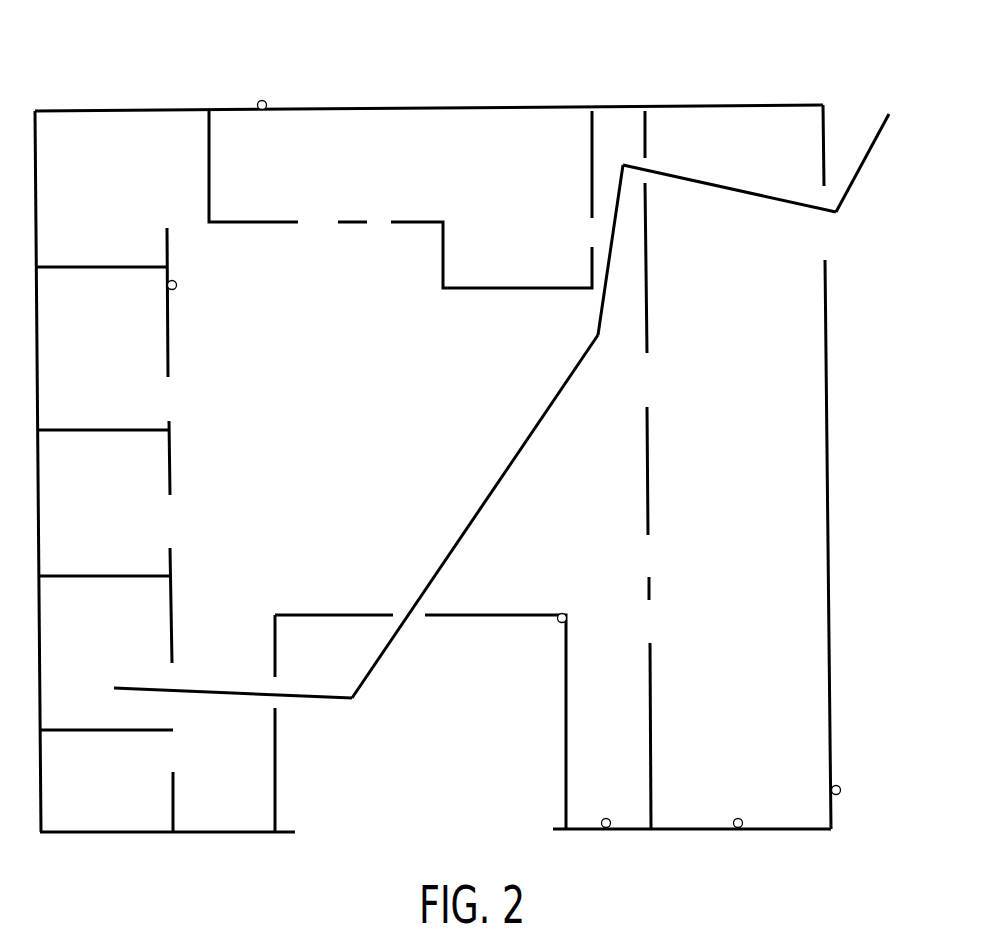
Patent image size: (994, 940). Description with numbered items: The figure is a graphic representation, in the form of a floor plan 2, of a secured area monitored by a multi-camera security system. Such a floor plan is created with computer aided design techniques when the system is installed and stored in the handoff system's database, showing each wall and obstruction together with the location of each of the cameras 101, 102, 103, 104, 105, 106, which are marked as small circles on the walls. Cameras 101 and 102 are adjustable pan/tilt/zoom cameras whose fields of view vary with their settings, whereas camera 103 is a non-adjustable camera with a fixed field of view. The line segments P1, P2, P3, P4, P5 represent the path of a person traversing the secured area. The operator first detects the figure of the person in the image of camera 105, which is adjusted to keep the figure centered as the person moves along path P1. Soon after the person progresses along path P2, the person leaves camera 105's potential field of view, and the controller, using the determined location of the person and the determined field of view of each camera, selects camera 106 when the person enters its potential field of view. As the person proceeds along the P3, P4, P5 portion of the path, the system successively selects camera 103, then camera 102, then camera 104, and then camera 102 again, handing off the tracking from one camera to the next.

The floor plan / building 2 is at (64, 53).
The video camera 101 is at (264, 100).
The video camera 102 is at (177, 285).
The video camera 103 is at (607, 818).
The video camera 104 is at (557, 622).
The video camera 105 is at (841, 792).
The video camera 106 is at (739, 818).
The path segment P1 is at (864, 160).
The path segment P2 is at (729, 191).
The path segment P3 is at (609, 265).
The path segment P4 is at (517, 451).
The path segment P5 is at (317, 702).